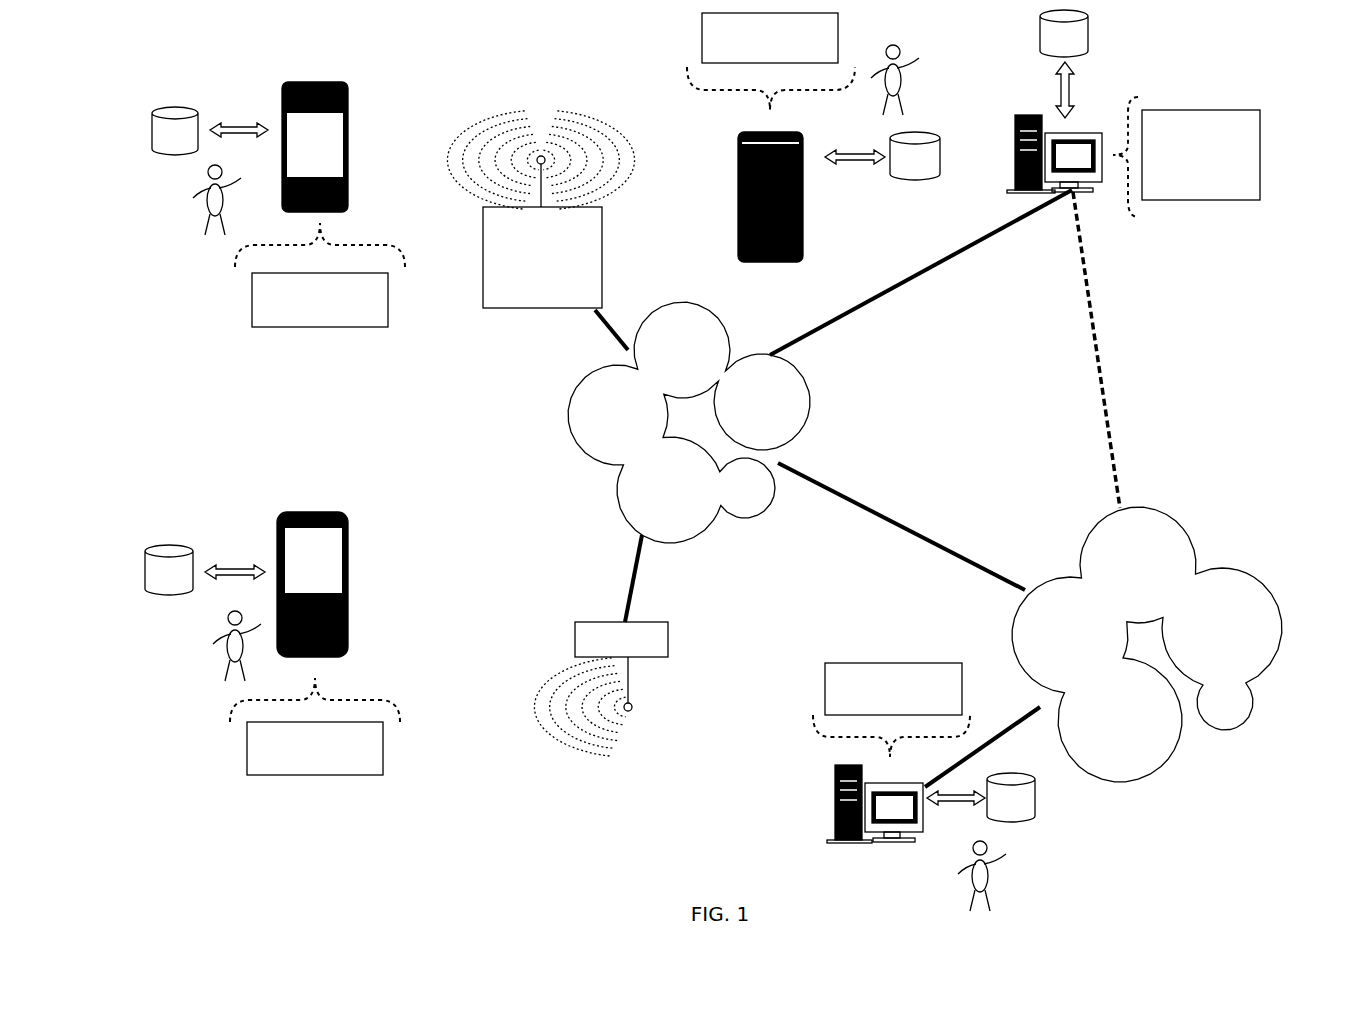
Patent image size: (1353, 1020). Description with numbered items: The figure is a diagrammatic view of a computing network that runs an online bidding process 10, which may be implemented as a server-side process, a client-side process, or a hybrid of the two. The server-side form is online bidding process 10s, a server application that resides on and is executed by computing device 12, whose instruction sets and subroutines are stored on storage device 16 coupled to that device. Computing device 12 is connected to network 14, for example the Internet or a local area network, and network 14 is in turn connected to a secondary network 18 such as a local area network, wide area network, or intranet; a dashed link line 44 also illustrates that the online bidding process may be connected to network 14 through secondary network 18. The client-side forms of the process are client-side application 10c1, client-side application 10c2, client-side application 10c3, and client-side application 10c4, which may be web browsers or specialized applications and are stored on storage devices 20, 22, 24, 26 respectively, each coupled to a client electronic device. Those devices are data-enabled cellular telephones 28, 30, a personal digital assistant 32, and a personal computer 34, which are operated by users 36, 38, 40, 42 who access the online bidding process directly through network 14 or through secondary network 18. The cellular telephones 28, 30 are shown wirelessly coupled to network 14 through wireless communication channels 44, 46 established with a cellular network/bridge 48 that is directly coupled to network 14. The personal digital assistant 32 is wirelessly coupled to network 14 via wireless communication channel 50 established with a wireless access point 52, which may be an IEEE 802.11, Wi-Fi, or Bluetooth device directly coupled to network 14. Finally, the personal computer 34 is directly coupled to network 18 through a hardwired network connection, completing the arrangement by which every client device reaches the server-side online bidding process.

The online bidding process 10 is at (1298, 53).
The online bidding process (server-side) 10s is at (1263, 148).
The client-side application 10c1 is at (840, 43).
The client-side application 10c2 is at (388, 291).
The client-side application 10c3 is at (383, 738).
The client-side application 10c4 is at (962, 688).
The computing device 12 is at (1015, 130).
The network 14 is at (689, 422).
The storage device 16 is at (1064, 33).
The secondary network 18 is at (1147, 644).
The storage device 20 is at (915, 156).
The storage device 22 is at (175, 131).
The storage device 24 is at (169, 570).
The storage device 26 is at (1011, 797).
The data-enabled cellular telephone 28 is at (802, 143).
The data-enabled cellular telephone 30 is at (355, 122).
The personal digital assistant 32 is at (343, 598).
The personal computer 34 is at (835, 800).
The user 36 is at (915, 58).
The user 38 is at (180, 189).
The user 40 is at (212, 625).
The user 42 is at (1017, 867).
The link line 44 is at (1102, 383).
The wireless communication channel 46 is at (438, 107).
The cellular network/bridge 48 is at (483, 233).
The wireless communication channel 50 is at (467, 622).
The wireless access point 52 is at (668, 637).